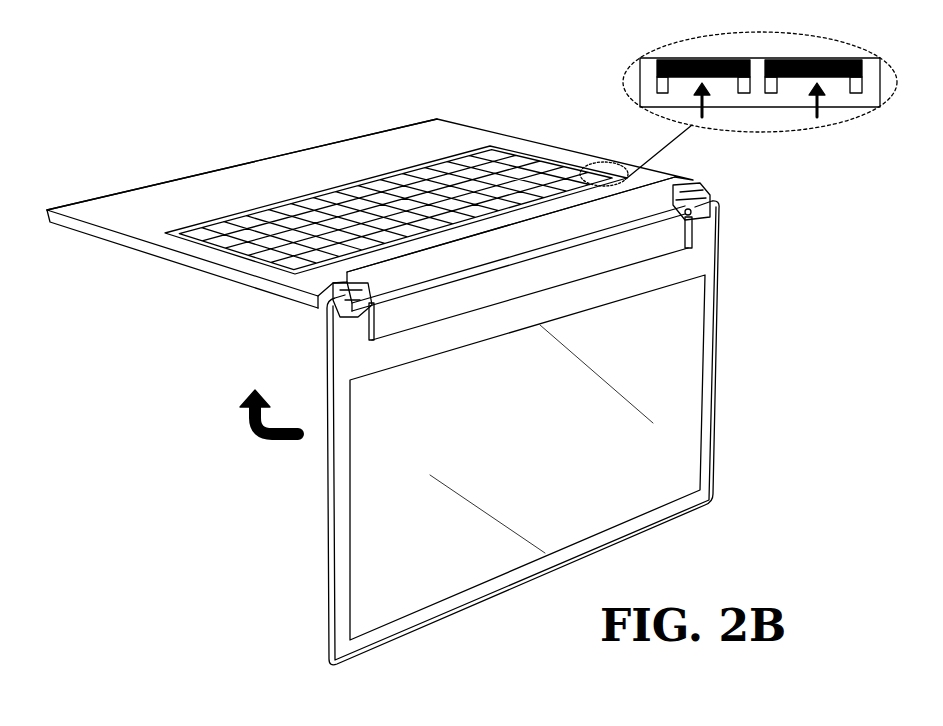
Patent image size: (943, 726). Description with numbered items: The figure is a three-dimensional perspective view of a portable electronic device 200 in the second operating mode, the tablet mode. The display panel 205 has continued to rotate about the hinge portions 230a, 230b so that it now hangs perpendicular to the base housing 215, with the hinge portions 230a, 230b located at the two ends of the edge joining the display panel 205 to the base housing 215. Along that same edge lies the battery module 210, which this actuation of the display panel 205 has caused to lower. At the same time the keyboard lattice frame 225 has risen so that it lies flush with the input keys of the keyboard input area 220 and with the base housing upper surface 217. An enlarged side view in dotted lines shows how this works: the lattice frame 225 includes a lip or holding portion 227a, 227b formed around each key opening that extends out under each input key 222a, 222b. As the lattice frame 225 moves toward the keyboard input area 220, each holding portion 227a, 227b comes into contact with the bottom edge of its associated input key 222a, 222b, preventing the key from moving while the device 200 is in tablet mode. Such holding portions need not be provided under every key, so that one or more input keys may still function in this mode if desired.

The portable electronic device 200 is at (167, 120).
The display panel 205 is at (325, 382).
The battery module 210 is at (423, 283).
The base housing 215 is at (563, 152).
The base housing upper surface 217 is at (410, 130).
The keyboard input area 220 is at (376, 176).
The input key 222a is at (688, 60).
The input key 222b is at (850, 62).
The keyboard lattice frame 225 is at (164, 231).
The holding portion 227a is at (741, 94).
The holding portion 227b is at (856, 96).
The hinge portion 230a is at (361, 303).
The hinge portion 230b is at (704, 195).